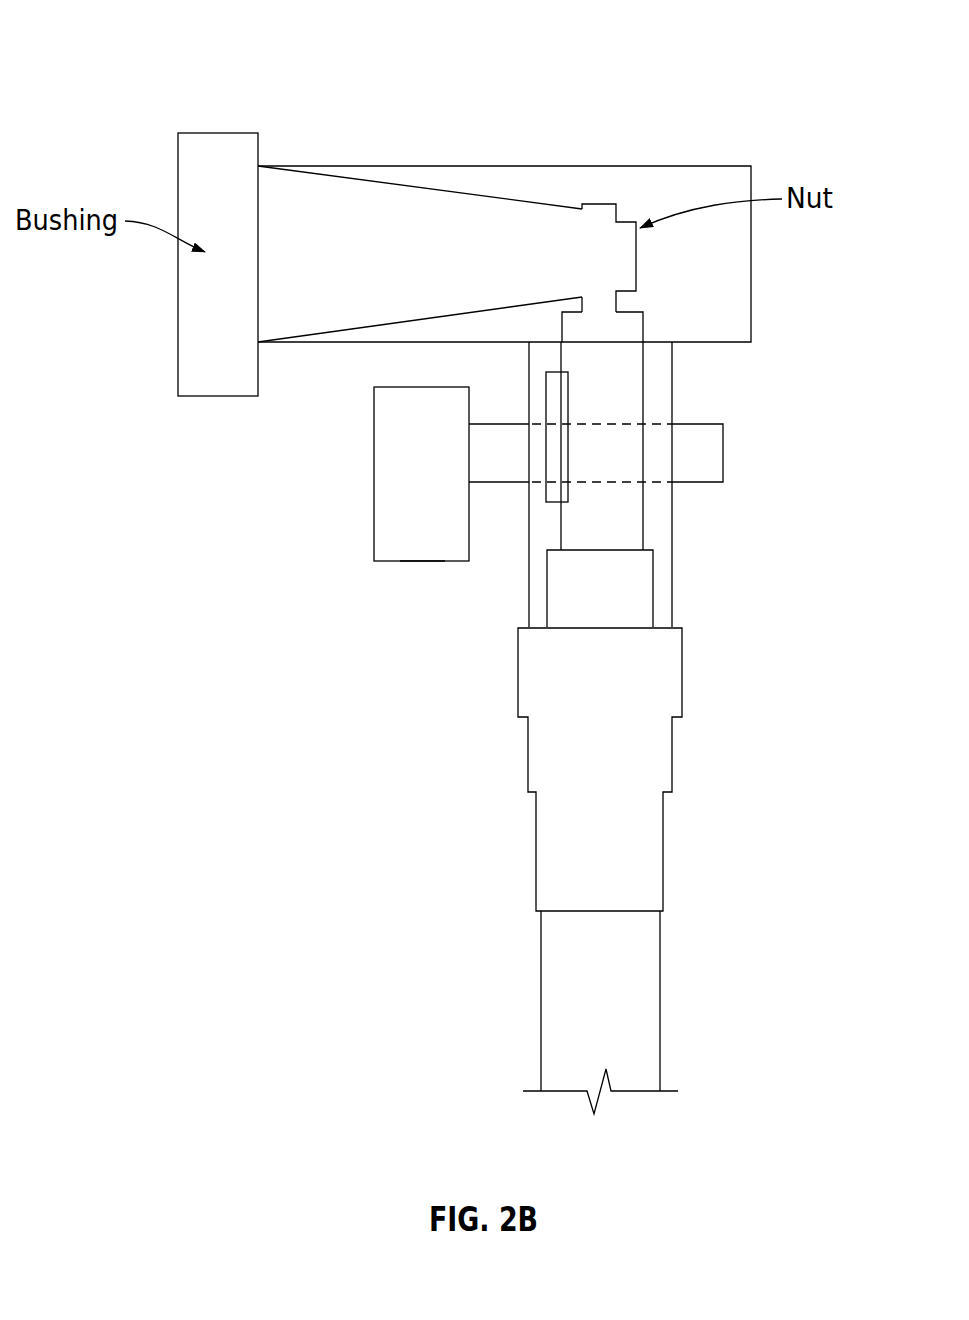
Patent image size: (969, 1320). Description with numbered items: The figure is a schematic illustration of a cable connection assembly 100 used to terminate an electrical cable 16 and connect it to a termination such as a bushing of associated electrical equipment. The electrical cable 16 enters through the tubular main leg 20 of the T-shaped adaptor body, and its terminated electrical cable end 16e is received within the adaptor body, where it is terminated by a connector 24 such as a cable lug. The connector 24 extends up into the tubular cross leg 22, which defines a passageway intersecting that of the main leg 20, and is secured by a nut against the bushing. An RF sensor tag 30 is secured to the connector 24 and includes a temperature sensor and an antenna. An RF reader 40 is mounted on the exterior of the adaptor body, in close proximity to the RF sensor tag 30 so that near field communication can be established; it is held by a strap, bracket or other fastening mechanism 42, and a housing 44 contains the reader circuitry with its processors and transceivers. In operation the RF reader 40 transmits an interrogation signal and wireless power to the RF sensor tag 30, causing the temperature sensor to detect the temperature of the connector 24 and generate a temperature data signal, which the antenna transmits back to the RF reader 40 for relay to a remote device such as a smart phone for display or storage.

The cable connection assembly 100 is at (148, 48).
The cross leg 22 is at (431, 165).
The connector 24 is at (643, 368).
The fastening mechanism 42 is at (723, 465).
The RF sensor tag 30 is at (546, 405).
The RF reader 40 is at (374, 508).
The housing 44 is at (421, 561).
The terminated electrical cable end 16e is at (621, 521).
The main leg 20 is at (672, 595).
The electrical cable 16 is at (570, 1020).